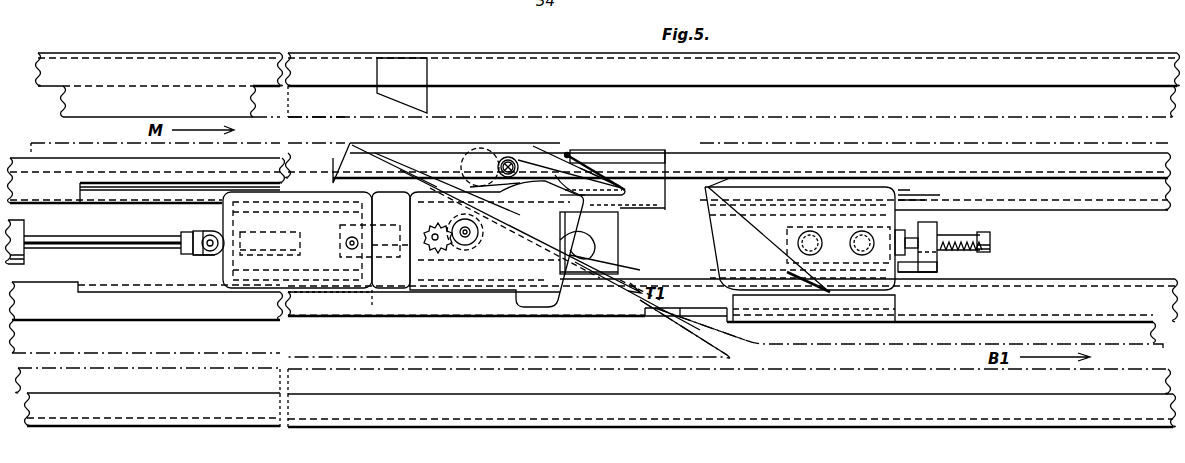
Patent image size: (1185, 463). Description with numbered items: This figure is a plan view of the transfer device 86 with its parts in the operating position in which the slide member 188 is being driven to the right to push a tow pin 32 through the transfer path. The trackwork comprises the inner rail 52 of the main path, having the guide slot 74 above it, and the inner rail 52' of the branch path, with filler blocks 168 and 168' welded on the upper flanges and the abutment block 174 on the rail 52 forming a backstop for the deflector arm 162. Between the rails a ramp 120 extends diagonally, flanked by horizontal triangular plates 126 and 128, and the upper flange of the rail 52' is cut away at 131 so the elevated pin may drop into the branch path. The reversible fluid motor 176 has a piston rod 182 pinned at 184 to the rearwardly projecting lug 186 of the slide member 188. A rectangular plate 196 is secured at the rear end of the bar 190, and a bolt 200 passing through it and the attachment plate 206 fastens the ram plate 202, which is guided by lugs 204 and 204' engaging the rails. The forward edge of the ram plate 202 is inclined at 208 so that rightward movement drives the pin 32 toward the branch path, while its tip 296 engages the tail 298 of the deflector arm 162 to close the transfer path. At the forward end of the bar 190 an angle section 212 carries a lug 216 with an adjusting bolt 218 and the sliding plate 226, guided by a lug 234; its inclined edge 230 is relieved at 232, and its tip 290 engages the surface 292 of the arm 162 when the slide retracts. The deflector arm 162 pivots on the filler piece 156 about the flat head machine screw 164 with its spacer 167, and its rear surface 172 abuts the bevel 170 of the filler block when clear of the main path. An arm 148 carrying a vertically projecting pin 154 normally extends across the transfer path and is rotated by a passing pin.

The inner rail 52 is at (608, 132).
The abutment block 174 is at (418, 72).
The filler block 168 is at (589, 165).
The tow pin guide slot 74 is at (349, 120).
The transfer device 86 is at (709, 149).
The deflector arm 162 is at (432, 150).
The horizontal triangular plate 126 is at (524, 221).
The rectangular plate 196 is at (248, 290).
The bolt 200 is at (346, 243).
The attachment plate 206 is at (388, 236).
The reversible fluid motor 176 is at (26, 258).
The piston rod 182 is at (125, 248).
The pin 184 is at (208, 236).
The rearwardly projecting lug 186 is at (215, 259).
The ram plate 202 is at (496, 244).
The lug 204 is at (513, 174).
The lug 204' is at (401, 296).
The vertically projecting pin 154 is at (484, 242).
The arm 148 is at (480, 167).
The flat head machine screw 164 is at (506, 157).
The spacer 167 is at (510, 157).
The rear surface 172 is at (546, 158).
The bevel 170 is at (569, 152).
The tip 296 is at (575, 195).
The tail 298 is at (596, 185).
The surface 292 is at (623, 188).
The filler piece 156 is at (604, 150).
The inclined edge 208 is at (570, 224).
The tow pin 32 is at (618, 246).
The ramp 120 is at (615, 255).
The horizontal triangular plate 128 is at (628, 265).
The relieved portion 232 is at (814, 297).
The guide lug 234 is at (832, 212).
The inclined edge 230 is at (747, 236).
The tip 290 is at (735, 185).
The sliding plate 226 is at (921, 190).
The lug 216 is at (937, 230).
The adjusting bolt 218 is at (985, 236).
The angle section 212 is at (940, 266).
The bar 190 is at (925, 275).
The filler block 168' is at (594, 316).
The slide member 188 is at (346, 302).
The cut out 131 is at (678, 316).
The inner rail 52' is at (596, 354).